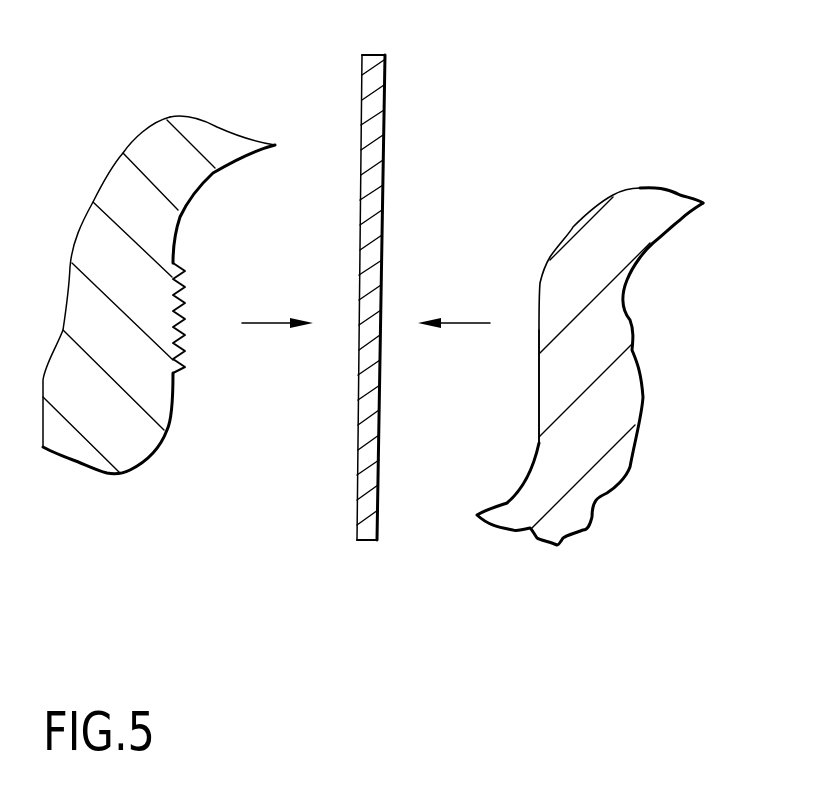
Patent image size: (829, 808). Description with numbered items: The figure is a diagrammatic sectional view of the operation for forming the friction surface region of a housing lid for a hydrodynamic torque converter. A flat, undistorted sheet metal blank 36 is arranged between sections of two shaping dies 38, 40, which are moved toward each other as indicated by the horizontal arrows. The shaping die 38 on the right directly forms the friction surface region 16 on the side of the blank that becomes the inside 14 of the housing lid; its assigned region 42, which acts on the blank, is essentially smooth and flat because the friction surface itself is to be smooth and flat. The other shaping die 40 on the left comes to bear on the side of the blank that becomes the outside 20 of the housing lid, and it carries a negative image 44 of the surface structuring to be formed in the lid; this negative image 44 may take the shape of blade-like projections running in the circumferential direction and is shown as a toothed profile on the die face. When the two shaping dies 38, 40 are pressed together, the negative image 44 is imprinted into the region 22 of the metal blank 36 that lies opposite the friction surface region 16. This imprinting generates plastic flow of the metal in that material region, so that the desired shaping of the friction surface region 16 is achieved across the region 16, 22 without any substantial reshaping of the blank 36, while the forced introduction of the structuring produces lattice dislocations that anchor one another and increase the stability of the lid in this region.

The inside 14 is at (478, 117).
The friction surface region 16 is at (394, 305).
The outside 20 is at (339, 98).
The region corresponding to the friction surface region 22 is at (343, 349).
The sheet metal blank 36 is at (387, 73).
The shaping die 38 is at (640, 188).
The shaping die 40 is at (163, 137).
The assigned region 42 is at (539, 368).
The negative image 44 is at (173, 373).